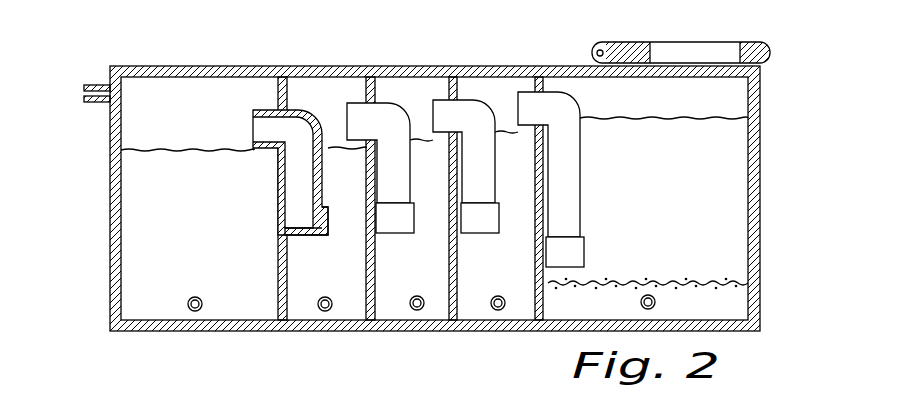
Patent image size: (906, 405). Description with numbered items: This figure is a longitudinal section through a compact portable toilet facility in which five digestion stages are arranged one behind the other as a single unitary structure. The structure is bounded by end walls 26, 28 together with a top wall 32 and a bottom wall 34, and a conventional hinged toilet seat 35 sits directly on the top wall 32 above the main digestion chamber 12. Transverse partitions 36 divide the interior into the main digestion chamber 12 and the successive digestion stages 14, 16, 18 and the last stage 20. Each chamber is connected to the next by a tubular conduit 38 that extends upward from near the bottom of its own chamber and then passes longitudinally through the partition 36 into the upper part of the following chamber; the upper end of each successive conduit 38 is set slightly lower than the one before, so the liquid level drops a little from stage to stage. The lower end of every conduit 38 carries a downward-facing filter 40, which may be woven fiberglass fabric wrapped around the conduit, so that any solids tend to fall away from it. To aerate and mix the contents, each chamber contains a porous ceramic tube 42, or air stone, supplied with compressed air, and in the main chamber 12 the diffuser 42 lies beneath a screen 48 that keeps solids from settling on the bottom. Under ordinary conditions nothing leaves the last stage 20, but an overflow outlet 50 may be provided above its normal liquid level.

The main digestion chamber 12 is at (676, 195).
The digestion stage 14 is at (524, 195).
The digestion stage 16 is at (442, 195).
The digestion stage 18 is at (356, 198).
The last digestion stage 20 is at (214, 228).
The end wall 26 is at (110, 163).
The end wall 28 is at (760, 146).
The top wall 32 is at (233, 66).
The bottom wall 34 is at (168, 331).
The hinged toilet seat 35 is at (750, 44).
The transverse partition 36 is at (366, 82).
The tubular conduit 38 is at (255, 112).
The filter 40 is at (306, 236).
The porous ceramic tube 42 is at (201, 298).
The screen 48 is at (708, 274).
The overflow outlet 50 is at (92, 85).